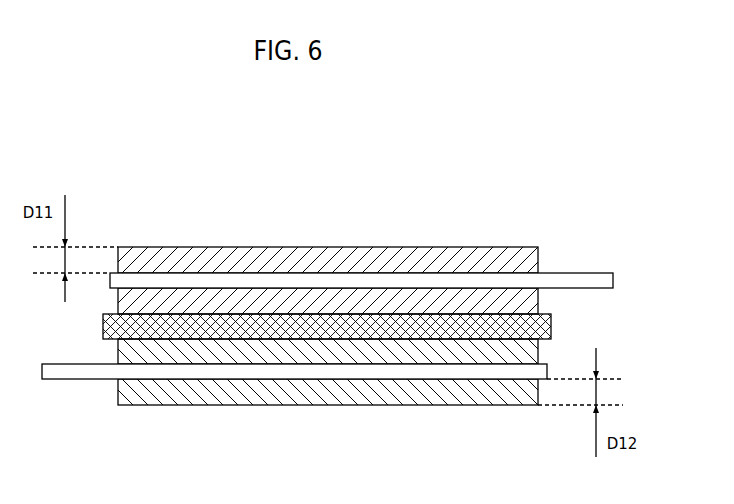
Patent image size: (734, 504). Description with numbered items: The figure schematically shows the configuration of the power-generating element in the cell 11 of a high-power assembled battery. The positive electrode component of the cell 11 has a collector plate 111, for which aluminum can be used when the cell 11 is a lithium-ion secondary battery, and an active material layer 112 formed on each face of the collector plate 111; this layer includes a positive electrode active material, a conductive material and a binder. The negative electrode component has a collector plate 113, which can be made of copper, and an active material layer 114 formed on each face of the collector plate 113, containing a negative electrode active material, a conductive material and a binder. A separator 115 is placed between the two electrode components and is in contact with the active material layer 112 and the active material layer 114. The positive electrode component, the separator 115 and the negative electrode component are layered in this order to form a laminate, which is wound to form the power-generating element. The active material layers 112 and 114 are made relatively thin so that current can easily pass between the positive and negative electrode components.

The cell 11 is at (652, 205).
The collector plate 111 is at (577, 278).
The active material layer 112 is at (307, 303).
The collector plate 113 is at (80, 372).
The active material layer 114 is at (377, 353).
The separator 115 is at (552, 325).